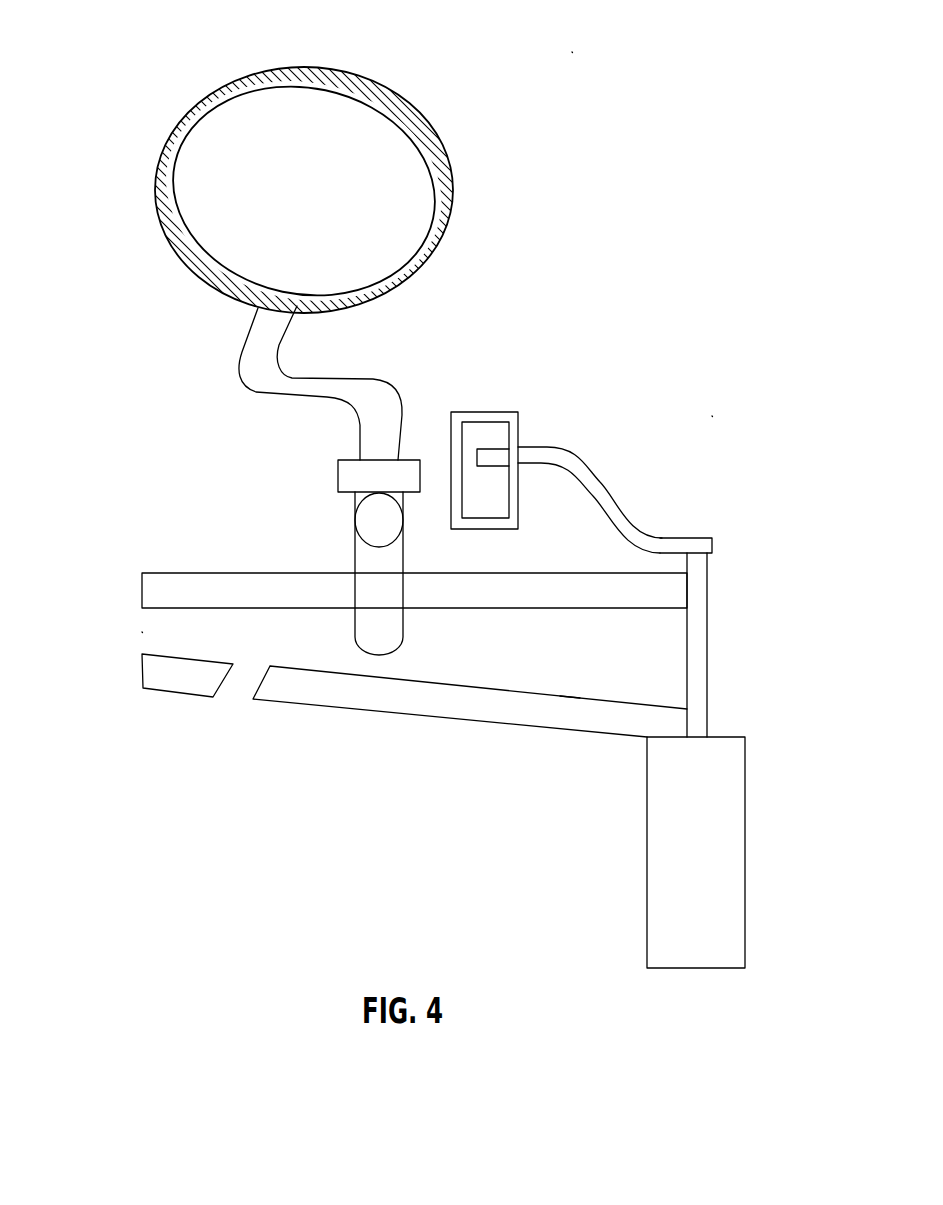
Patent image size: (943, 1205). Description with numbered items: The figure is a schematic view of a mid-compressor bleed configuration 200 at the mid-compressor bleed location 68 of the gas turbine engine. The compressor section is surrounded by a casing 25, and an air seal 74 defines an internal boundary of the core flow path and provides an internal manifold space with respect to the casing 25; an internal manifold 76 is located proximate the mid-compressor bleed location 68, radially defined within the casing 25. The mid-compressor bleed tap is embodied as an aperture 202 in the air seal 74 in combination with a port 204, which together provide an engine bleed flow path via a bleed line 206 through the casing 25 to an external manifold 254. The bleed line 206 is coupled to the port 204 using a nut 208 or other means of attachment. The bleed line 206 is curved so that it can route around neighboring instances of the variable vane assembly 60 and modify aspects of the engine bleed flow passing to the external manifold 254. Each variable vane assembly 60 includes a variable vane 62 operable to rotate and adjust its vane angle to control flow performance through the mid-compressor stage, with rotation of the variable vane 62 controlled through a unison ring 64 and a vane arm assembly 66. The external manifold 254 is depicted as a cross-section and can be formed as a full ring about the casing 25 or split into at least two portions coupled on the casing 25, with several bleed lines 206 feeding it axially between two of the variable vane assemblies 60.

The mid-compressor bleed configuration 200 is at (574, 50).
The external manifold 254 is at (225, 120).
The bleed line 206 is at (258, 362).
The nut 208 is at (338, 473).
The port 204 is at (378, 655).
The casing 25 is at (185, 573).
The mid-compressor bleed location 68 is at (140, 631).
The aperture 202 is at (233, 700).
The air seal 74 is at (460, 722).
The internal manifold 76 is at (577, 668).
The variable vane assembly 60 is at (714, 414).
The unison ring 64 is at (497, 412).
The vane arm assembly 66 is at (582, 455).
The variable vane 62 is at (726, 737).